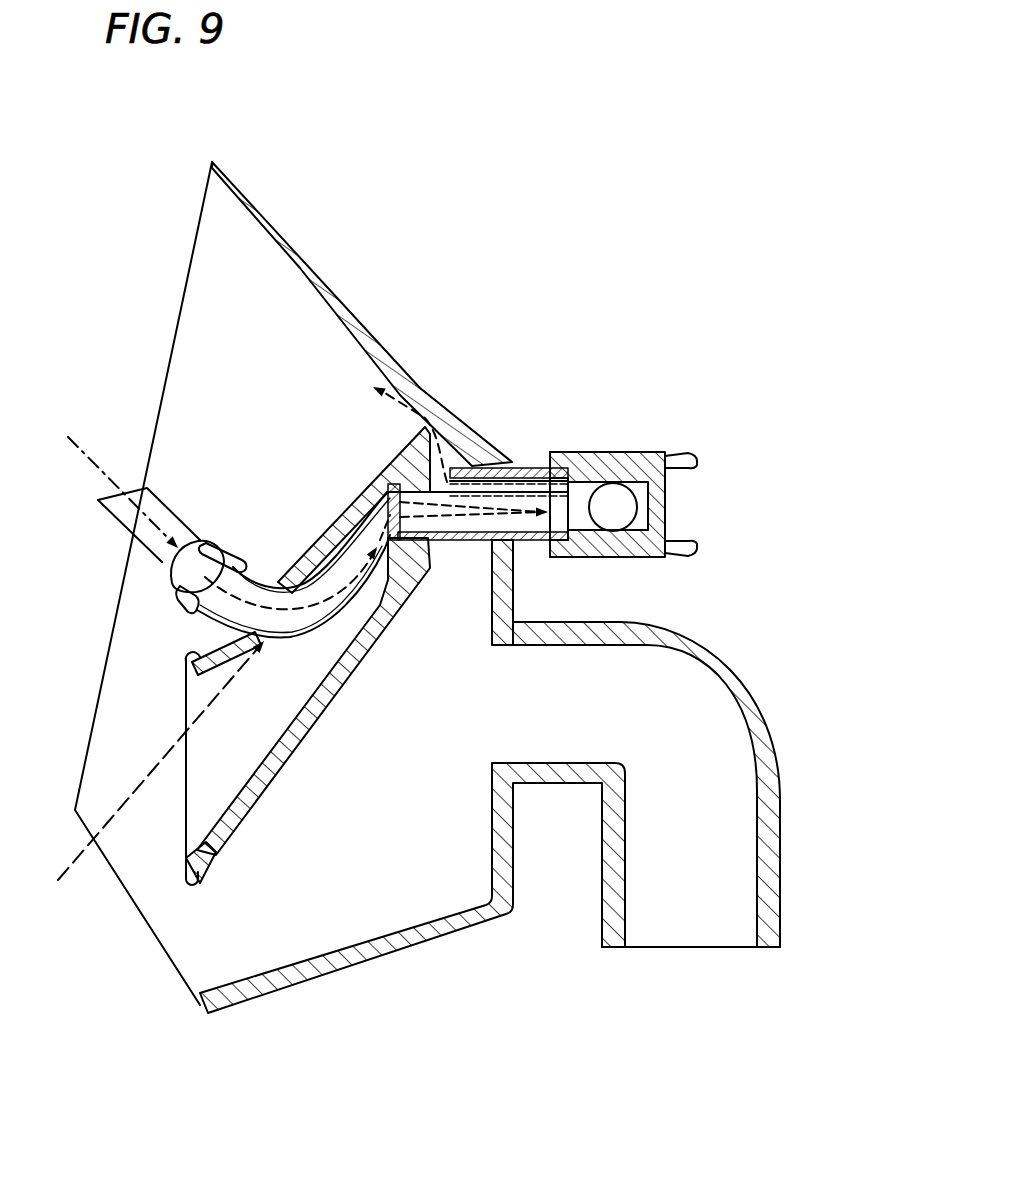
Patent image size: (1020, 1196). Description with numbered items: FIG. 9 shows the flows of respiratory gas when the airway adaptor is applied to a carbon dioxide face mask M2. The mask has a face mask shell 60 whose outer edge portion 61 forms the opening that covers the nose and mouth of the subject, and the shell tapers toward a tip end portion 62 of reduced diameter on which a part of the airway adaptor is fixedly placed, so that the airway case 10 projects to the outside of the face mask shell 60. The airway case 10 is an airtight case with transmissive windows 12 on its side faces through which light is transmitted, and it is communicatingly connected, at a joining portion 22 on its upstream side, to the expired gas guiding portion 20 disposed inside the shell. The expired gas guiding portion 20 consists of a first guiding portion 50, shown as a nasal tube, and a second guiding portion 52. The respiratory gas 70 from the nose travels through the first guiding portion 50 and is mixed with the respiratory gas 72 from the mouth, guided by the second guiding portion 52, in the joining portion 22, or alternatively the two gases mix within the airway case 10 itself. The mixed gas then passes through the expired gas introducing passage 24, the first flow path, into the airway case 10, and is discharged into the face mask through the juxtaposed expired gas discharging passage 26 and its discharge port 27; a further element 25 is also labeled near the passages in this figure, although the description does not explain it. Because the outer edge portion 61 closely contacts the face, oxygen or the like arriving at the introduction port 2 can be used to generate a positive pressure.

The carbon dioxide face mask M2 is at (270, 165).
The introduction port 2 is at (727, 688).
The airway case 10 is at (648, 452).
The transmissive windows 12 is at (625, 507).
The expired gas guiding portion 20 is at (385, 440).
The joining portion 22 is at (455, 543).
The expired gas introducing passage 24 is at (520, 532).
The tube portion 25 is at (498, 482).
The expired gas discharging passage 26 is at (543, 482).
The discharge port 27 is at (469, 482).
The first guiding portion 50 is at (163, 562).
The second guiding portion 52 is at (213, 847).
The face mask shell 60 is at (197, 307).
The outer edge portion 61 is at (207, 185).
The tip end portion 62 is at (537, 482).
The respiratory gas from the nose 70 is at (90, 432).
The respiratory gas from the mouth 72 is at (55, 885).